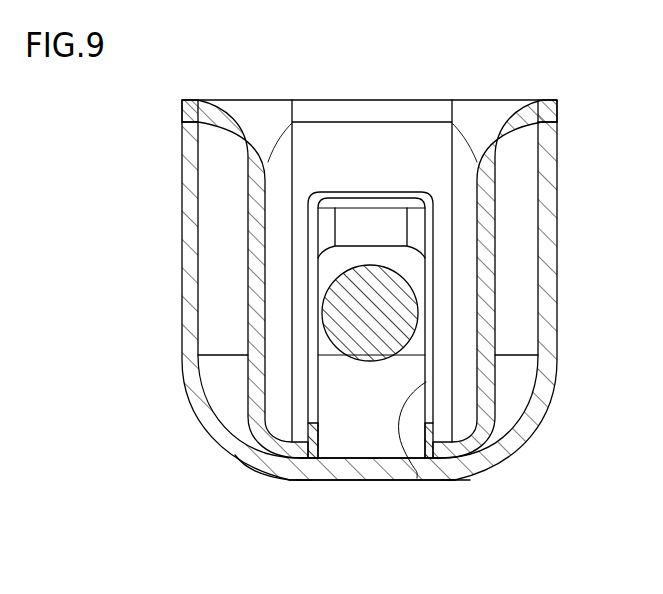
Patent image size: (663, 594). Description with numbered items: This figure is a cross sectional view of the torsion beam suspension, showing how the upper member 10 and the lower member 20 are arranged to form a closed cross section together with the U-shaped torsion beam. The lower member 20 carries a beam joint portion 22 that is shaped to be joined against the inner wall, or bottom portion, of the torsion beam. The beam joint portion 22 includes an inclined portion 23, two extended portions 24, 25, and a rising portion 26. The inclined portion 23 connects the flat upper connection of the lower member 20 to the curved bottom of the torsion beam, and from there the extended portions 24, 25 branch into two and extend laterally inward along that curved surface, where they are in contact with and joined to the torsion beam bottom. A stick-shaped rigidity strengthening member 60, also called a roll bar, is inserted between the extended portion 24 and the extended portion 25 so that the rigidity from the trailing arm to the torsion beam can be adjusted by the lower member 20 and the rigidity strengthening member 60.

The upper member 10 is at (184, 369).
The lower member 20 is at (243, 100).
The beam joint portion 22 is at (455, 519).
The inclined portion 23 is at (303, 479).
The extended portion 24 is at (460, 479).
The extended portion 25 is at (293, 482).
The rising portion 26 is at (392, 480).
The rigidity strengthening member 60 is at (437, 327).